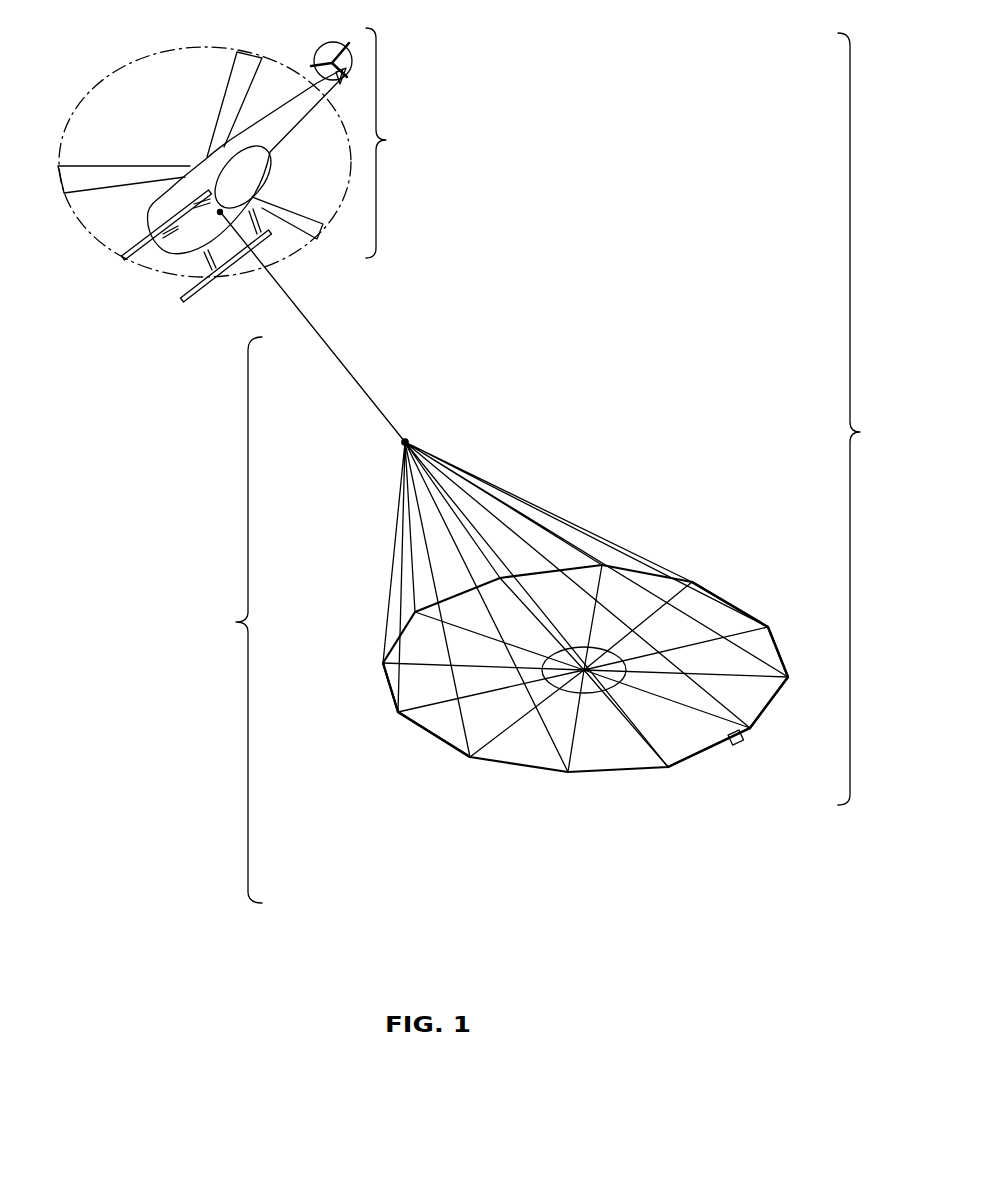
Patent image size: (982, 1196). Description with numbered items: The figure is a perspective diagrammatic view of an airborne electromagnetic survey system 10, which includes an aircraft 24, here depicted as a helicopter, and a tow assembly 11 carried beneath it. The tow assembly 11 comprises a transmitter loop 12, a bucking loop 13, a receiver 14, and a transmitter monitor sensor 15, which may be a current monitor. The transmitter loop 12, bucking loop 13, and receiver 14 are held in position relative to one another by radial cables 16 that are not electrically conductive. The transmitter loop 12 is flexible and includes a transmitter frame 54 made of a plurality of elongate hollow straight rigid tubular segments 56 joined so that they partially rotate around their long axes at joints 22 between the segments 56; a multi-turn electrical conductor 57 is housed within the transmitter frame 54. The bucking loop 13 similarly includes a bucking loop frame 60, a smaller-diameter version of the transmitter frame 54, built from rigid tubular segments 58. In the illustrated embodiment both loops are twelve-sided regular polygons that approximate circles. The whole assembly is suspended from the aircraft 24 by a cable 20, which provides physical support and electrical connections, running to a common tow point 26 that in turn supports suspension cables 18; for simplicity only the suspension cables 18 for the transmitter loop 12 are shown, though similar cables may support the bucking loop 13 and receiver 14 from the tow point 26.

The airborne electromagnetic survey system 10 is at (867, 419).
The tow assembly 11 is at (232, 620).
The transmitter loop 12 is at (716, 746).
The bucking loop 13 is at (594, 693).
The receiver 14 is at (552, 692).
The transmitter monitor sensor 15 is at (748, 745).
The radial cables 16 is at (748, 626).
The suspension cables 18 is at (643, 552).
The cable 20 is at (352, 368).
The joints 22 is at (398, 711).
The aircraft 24 is at (242, 165).
The common tow point 26 is at (406, 438).
The transmitter frame 54 is at (416, 731).
The tubular segments 56 is at (430, 605).
The multi-turn electrical conductor 57 is at (690, 768).
The tubular segments 58 is at (580, 643).
The bucking loop frame 60 is at (623, 688).